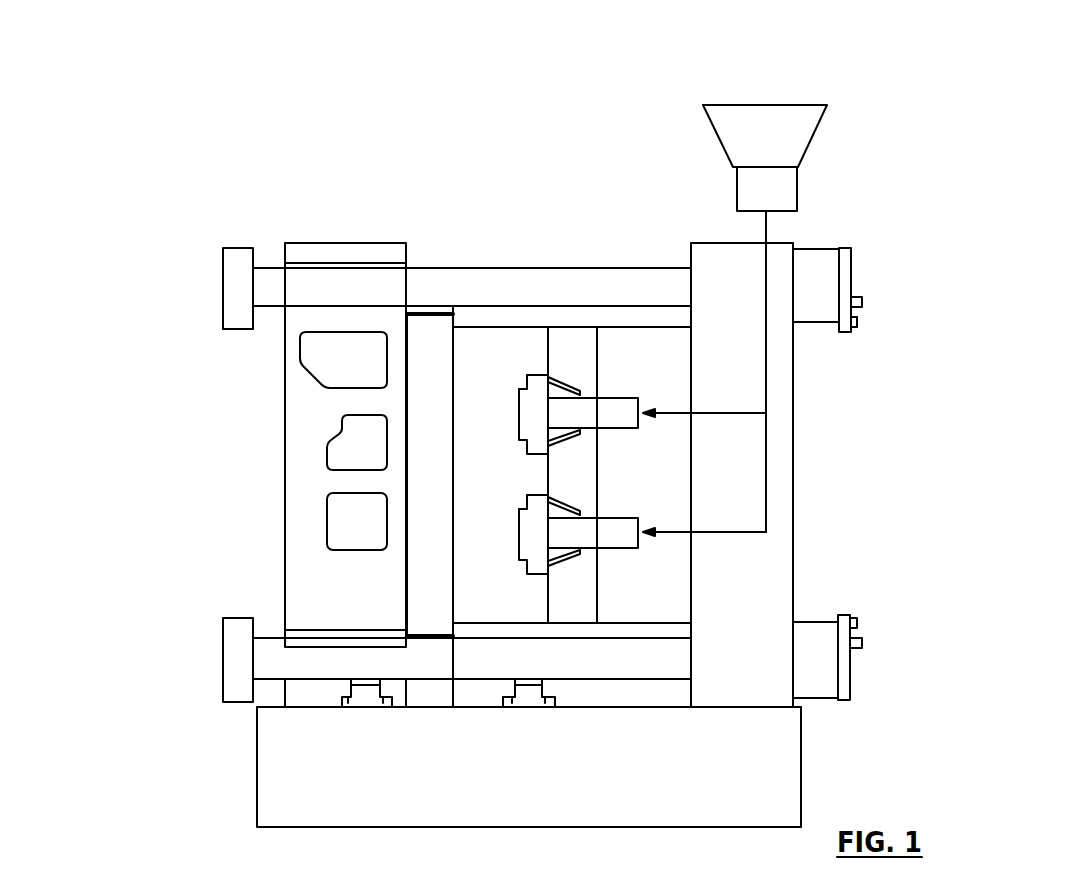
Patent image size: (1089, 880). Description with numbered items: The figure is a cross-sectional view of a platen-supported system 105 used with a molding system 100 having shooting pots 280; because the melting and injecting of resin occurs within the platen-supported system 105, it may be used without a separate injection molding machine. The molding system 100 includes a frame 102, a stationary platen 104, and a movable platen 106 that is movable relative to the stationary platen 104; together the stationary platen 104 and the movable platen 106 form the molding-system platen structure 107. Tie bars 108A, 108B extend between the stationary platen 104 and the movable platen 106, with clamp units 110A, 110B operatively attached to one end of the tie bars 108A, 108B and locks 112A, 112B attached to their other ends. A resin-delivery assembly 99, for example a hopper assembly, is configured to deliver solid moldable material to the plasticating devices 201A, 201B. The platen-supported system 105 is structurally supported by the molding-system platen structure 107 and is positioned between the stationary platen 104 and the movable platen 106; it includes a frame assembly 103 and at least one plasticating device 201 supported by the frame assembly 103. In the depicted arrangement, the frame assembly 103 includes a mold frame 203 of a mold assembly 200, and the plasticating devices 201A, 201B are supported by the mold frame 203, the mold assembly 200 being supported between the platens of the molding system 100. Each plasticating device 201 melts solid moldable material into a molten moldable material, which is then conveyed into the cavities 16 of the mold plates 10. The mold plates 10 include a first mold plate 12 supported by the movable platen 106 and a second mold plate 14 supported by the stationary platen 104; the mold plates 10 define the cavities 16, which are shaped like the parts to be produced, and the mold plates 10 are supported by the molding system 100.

The molding system 100 is at (458, 102).
The platen-supported system 105 is at (480, 106).
The molding-system platen structure 107 is at (678, 163).
The movable platen 106 is at (332, 240).
The stationary platen 104 is at (705, 240).
The mold plates 10 is at (549, 437).
The first mold plate 12 is at (482, 336).
The second mold plate 14 is at (573, 336).
The cavities 16 is at (614, 485).
The resin-delivery assembly 99 is at (815, 143).
The clamp unit 110A is at (858, 263).
The clamp unit 110B is at (853, 663).
The tie bar 108A is at (265, 266).
The tie bar 108B is at (266, 632).
The lock 112A is at (228, 330).
The lock 112B is at (237, 618).
The frame 102 is at (801, 755).
The frame assembly 103 is at (930, 408).
The mold assembly 200 is at (486, 167).
The plasticating device 201 is at (874, 448).
The plasticating device 201A is at (587, 422).
The plasticating device 201B is at (587, 541).
The mold frame 203 is at (679, 350).
The shooting pots 280 is at (570, 592).